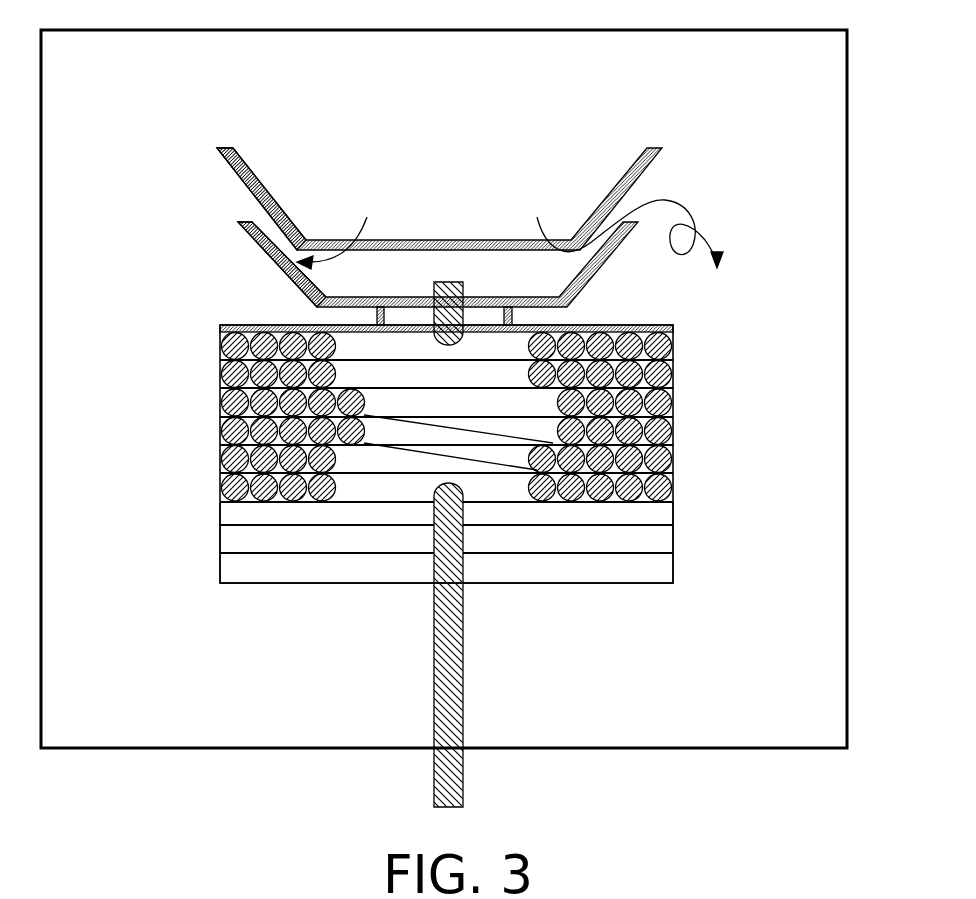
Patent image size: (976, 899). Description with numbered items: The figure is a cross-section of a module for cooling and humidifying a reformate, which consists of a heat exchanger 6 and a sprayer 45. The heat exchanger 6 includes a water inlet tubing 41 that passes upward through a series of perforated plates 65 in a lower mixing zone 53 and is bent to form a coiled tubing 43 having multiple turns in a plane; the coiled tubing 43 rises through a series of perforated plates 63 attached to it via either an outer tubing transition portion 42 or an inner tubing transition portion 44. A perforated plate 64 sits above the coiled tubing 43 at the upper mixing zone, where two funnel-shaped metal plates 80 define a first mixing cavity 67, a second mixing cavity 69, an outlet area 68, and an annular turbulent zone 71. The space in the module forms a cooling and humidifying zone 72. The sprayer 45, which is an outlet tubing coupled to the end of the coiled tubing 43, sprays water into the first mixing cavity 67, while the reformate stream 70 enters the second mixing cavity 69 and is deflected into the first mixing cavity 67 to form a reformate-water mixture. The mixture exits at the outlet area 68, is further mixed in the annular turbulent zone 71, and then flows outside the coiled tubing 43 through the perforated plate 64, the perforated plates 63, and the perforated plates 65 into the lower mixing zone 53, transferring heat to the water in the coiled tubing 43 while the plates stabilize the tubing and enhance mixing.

The heat exchanger 6 is at (763, 385).
The water inlet tubing 41 is at (433, 632).
The outer tubing transition portion 42 is at (673, 430).
The coiled tubing 43 is at (220, 465).
The inner tubing transition portion 44 is at (397, 493).
The sprayer 45 is at (316, 297).
The lower mixing zone 53 is at (220, 583).
The perforated plates 63 is at (503, 513).
The perforated plate 64 is at (652, 325).
The perforated plates 65 is at (608, 572).
The first mixing cavity 67 is at (263, 248).
The outlet area 68 is at (273, 233).
The second mixing cavity 69 is at (268, 178).
The reformate stream 70 is at (472, 168).
The annular turbulent zone 71 is at (718, 258).
The cooling and humidifying zone 72 is at (718, 178).
The funnel-shaped metal plates 80 is at (282, 270).